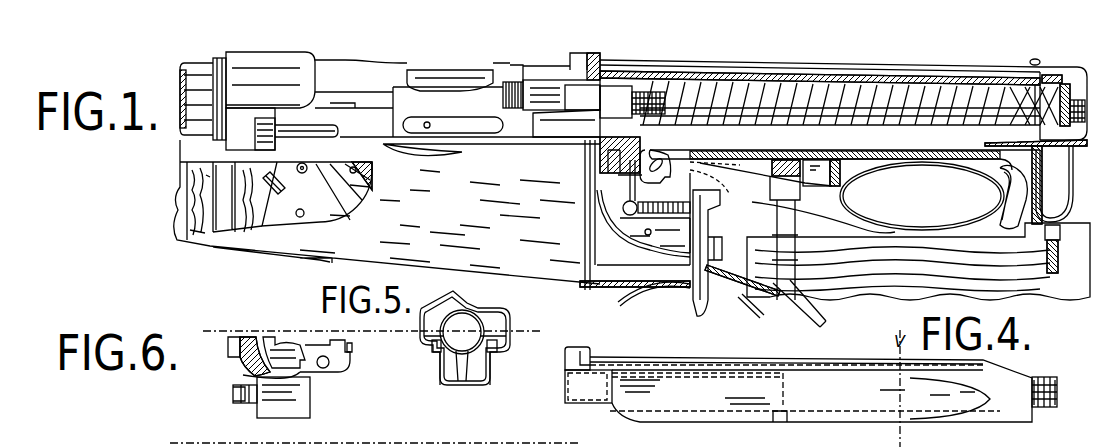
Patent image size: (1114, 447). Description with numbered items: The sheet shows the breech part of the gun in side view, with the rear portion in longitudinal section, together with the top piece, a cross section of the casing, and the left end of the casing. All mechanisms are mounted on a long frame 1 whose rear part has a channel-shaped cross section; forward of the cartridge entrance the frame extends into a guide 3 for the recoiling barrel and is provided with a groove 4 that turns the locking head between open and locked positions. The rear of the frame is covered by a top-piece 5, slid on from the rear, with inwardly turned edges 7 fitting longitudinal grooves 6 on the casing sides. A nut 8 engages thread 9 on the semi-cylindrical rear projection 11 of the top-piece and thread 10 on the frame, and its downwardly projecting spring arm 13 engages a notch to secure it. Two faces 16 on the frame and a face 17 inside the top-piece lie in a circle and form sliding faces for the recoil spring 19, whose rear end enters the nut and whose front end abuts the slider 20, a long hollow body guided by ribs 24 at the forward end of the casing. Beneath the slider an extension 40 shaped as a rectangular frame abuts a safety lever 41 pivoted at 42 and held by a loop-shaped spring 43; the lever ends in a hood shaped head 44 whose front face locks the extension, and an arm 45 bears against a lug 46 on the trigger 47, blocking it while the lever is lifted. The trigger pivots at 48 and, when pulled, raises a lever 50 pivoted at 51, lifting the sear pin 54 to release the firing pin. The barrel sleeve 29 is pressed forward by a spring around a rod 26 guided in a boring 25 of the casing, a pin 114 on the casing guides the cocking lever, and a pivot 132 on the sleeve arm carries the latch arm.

In FIG. 1, the frame 1 is at (756, 156).
In FIG. 5, the frame 1 is at (440, 379).
In FIG. 1, the guide 3 is at (179, 151).
In FIG. 6, the groove 4 is at (385, 446).
In FIG. 1, the top-piece 5 is at (818, 72).
In FIG. 4, the top-piece 5 is at (798, 384).
In FIG. 5, the top-piece 5 is at (510, 326).
In FIG. 5, the longitudinal grooves 6 is at (432, 352).
In FIG. 5, the inwardly turned edges 7 is at (433, 338).
In FIG. 1, the nut 8 is at (1056, 75).
In FIG. 4, the thread 9 is at (1052, 380).
In FIG. 1, the thread 10 is at (1048, 146).
In FIG. 4, the semi-cylindrical rear projection 11 is at (1058, 394).
In FIG. 1, the spring arm 13 is at (1064, 206).
In FIG. 1, the faces 16 is at (940, 118).
In FIG. 5, the faces 16 is at (459, 384).
In FIG. 1, the face 17 is at (930, 86).
In FIG. 5, the face 17 is at (478, 316).
In FIG. 1, the recoil spring 19 is at (870, 120).
In FIG. 1, the slider 20 is at (440, 92).
In FIG. 6, the ribs 24 is at (297, 343).
In FIG. 6, the boring 25 is at (322, 374).
In FIG. 1, the rod 26 is at (311, 127).
In FIG. 1, the barrel sleeve 29 is at (258, 67).
In FIG. 1, the extension 40 is at (541, 140).
In FIG. 1, the safety lever 41 is at (895, 245).
In FIG. 1, the pivot pin 42 is at (995, 172).
In FIG. 1, the spring 43 is at (990, 215).
In FIG. 1, the hood shaped head 44 is at (656, 158).
In FIG. 1, the arm 45 is at (714, 214).
In FIG. 1, the lug 46 is at (712, 253).
In FIG. 1, the trigger 47 is at (698, 306).
In FIG. 1, the pivot 48 is at (710, 162).
In FIG. 1, the lever 50 is at (672, 208).
In FIG. 1, the pivot 51 is at (840, 158).
In FIG. 1, the sear pin 54 is at (625, 187).
In FIG. 6, the pin 114 is at (236, 391).
In FIG. 6, the pivot 132 is at (348, 352).